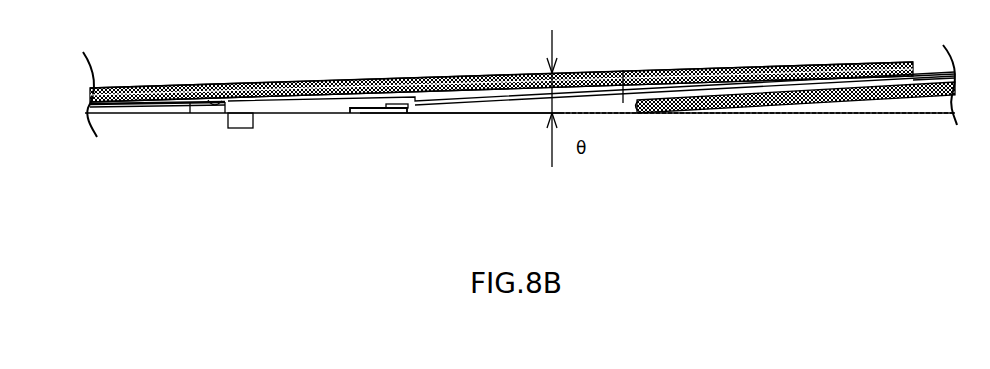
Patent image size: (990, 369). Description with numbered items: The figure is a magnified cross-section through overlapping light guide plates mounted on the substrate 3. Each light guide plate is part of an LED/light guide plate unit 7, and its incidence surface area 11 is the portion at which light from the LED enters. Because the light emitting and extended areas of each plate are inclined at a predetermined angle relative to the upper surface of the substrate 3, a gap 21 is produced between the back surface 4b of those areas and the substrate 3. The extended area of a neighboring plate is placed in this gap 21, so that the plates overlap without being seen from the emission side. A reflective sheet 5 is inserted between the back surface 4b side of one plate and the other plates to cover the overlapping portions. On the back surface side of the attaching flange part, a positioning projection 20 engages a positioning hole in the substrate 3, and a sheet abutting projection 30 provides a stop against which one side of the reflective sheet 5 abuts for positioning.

The substrate 3 is at (152, 88).
The back surface 4b is at (191, 104).
The reflective sheet 5 is at (152, 107).
The light guide plate unit 7 is at (637, 104).
The incidence surface area 11 is at (209, 100).
The positioning projection 20 is at (254, 120).
The gap 21 is at (624, 72).
The sheet abutting projection 30 is at (394, 109).